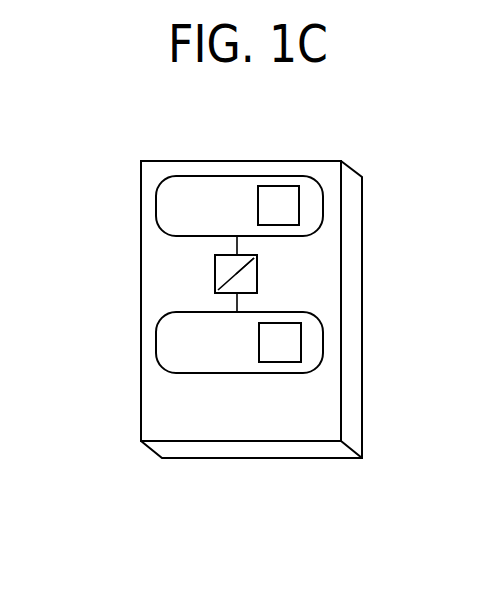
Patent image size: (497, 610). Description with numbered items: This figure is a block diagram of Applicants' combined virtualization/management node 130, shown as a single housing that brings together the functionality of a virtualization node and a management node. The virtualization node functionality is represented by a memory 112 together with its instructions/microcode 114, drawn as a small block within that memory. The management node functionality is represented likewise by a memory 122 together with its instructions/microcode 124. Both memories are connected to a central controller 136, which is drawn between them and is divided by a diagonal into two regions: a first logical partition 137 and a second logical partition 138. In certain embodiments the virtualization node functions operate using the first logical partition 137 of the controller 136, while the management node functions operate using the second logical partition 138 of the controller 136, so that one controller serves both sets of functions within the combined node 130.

The virtualization/management node 130 is at (316, 467).
The memory 112 is at (198, 176).
The instructions/microcode 114 is at (278, 196).
The memory 122 is at (157, 343).
The instructions/microcode 124 is at (292, 345).
The controller 136 is at (259, 264).
The first logical partition 137 is at (224, 264).
The second logical partition 138 is at (248, 277).